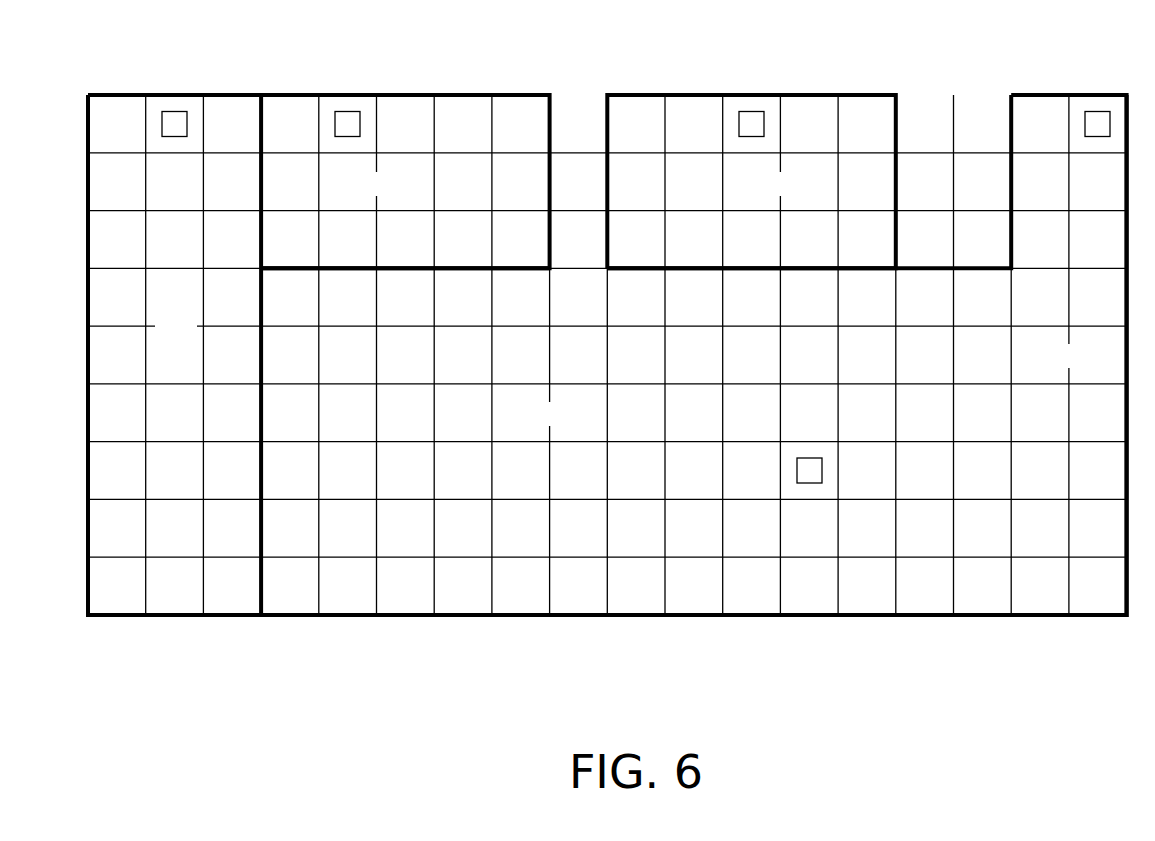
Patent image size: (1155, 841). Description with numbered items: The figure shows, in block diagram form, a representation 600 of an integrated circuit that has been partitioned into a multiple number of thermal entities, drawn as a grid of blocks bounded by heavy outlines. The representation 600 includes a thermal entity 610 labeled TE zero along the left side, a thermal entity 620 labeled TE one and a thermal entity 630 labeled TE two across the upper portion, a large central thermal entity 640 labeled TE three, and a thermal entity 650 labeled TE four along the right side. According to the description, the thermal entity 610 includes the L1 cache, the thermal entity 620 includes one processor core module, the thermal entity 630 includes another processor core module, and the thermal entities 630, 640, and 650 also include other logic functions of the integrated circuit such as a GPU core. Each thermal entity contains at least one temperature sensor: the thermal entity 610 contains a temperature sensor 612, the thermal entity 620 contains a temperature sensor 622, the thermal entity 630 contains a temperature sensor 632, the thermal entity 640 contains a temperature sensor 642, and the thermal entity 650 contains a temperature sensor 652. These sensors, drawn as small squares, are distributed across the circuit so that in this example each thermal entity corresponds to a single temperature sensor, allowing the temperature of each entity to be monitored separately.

The representation 600 is at (632, 728).
The thermal entity 610 is at (113, 93).
The temperature sensor 612 is at (172, 112).
The thermal entity 620 is at (286, 93).
The temperature sensor 622 is at (346, 112).
The thermal entity 630 is at (690, 93).
The temperature sensor 632 is at (750, 112).
The thermal entity 640 is at (752, 616).
The temperature sensor 642 is at (809, 483).
The thermal entity 650 is at (1037, 93).
The temperature sensor 652 is at (1094, 112).